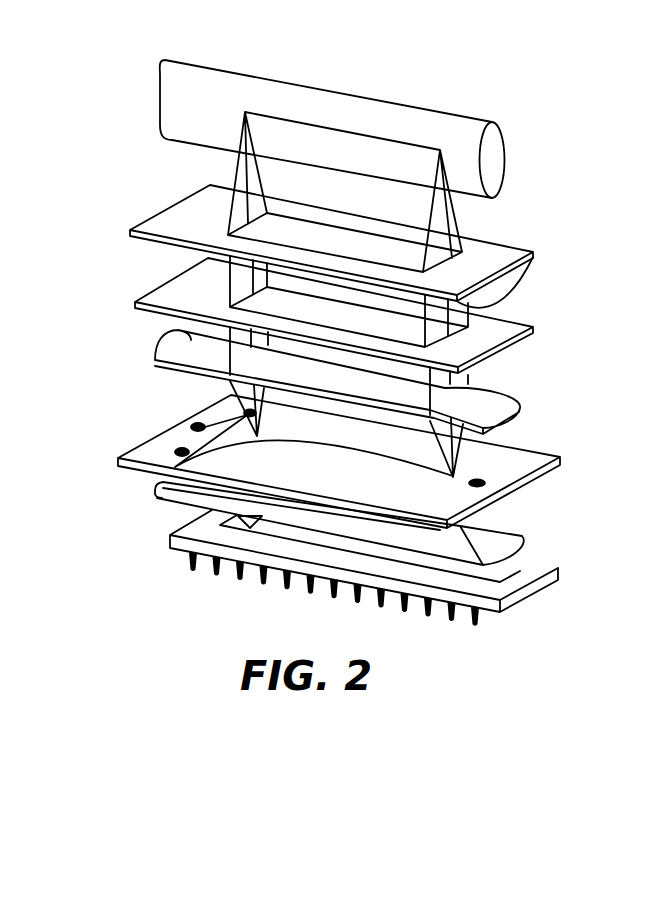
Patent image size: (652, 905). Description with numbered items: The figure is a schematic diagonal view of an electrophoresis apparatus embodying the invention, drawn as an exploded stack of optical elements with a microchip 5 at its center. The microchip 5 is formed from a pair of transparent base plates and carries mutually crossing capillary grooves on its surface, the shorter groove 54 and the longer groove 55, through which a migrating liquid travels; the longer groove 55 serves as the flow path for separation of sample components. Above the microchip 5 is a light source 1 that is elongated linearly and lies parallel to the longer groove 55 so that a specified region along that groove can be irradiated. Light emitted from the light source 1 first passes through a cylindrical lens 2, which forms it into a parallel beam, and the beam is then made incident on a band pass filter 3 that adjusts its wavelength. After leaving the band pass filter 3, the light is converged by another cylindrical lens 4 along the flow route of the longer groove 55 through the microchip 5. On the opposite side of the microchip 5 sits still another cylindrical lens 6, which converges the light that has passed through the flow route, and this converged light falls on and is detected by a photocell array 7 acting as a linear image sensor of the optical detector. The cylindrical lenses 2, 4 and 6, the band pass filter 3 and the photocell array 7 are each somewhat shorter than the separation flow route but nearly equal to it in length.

The light source 1 is at (490, 160).
The cylindrical lens 2 is at (537, 258).
The band pass filter 3 is at (537, 328).
The cylindrical lens 4 is at (522, 400).
The microchip 5 is at (548, 450).
The shorter groove 54 is at (182, 452).
The longer groove 55 is at (175, 467).
The cylindrical lens 6 is at (523, 535).
The photocell array 7 is at (560, 575).